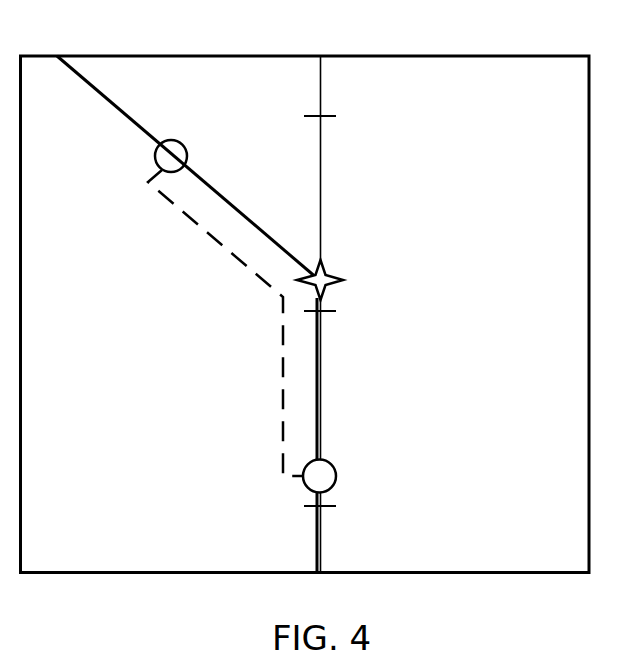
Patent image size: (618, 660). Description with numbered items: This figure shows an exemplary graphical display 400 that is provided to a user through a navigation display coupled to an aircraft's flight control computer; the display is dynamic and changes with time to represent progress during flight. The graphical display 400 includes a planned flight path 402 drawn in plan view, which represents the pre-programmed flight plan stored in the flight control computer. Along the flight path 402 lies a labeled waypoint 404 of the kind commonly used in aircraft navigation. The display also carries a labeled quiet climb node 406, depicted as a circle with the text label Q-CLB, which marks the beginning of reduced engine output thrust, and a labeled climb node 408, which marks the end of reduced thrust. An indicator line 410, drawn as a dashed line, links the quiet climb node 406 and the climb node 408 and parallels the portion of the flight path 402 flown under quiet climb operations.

The graphical display 400 is at (470, 56).
The planned flight path 402 is at (113, 108).
The labeled waypoint 404 is at (322, 262).
The quiet climb node 406 is at (335, 482).
The climb node 408 is at (153, 153).
The indicator line 410 is at (228, 250).